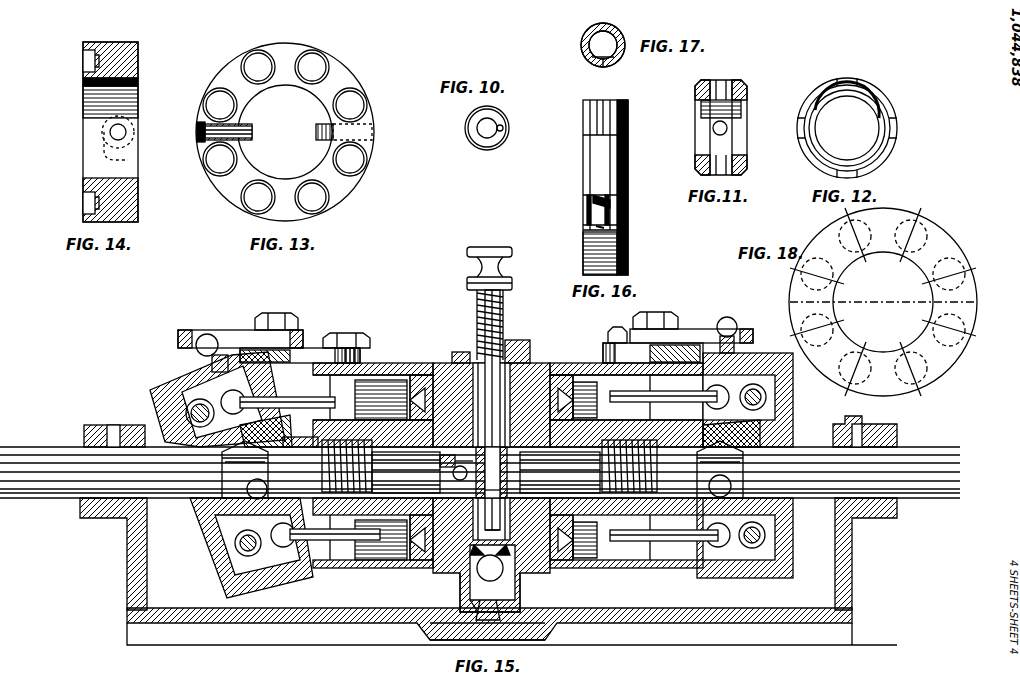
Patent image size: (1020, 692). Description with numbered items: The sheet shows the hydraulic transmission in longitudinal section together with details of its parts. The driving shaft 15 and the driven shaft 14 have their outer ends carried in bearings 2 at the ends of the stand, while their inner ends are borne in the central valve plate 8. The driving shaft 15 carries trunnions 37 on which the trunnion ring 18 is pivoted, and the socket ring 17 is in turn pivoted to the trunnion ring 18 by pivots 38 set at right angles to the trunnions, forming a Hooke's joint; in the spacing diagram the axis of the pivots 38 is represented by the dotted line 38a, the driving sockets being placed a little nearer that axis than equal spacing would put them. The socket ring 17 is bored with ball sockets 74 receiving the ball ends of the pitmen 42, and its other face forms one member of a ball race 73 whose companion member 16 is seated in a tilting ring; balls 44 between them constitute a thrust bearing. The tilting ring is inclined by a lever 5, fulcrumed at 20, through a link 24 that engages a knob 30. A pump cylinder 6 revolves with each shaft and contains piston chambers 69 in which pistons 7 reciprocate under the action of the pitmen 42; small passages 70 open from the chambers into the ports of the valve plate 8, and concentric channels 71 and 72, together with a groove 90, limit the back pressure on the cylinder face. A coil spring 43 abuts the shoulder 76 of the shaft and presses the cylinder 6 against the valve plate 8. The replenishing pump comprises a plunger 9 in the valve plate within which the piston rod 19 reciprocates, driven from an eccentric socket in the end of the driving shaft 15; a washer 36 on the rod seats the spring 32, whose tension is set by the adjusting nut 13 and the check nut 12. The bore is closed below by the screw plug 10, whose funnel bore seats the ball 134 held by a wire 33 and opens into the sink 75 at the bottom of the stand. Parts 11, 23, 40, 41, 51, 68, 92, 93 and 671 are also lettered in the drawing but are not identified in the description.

In FIG. 15, the bearings 2 is at (489, 431).
In FIG. 15, the lever 5 is at (471, 353).
In FIG. 15, the pump cylinder 6 is at (508, 466).
In FIG. 15, the pistons 7 is at (490, 467).
In FIG. 15, the valve plate 8 is at (491, 487).
In FIG. 17, the plunger 9 is at (603, 36).
In FIG. 16, the plunger 9 is at (629, 158).
In FIG. 15, the plunger 9 is at (482, 380).
In FIG. 15, the screw plug 10 is at (496, 592).
In FIG. 15, the nut 11 is at (519, 346).
In FIG. 15, the check nut 12 is at (502, 260).
In FIG. 15, the adjusting nut 13 is at (501, 283).
In FIG. 15, the driven shaft 14 is at (502, 569).
In FIG. 10, the driving shaft 15 is at (465, 128).
In FIG. 15, the driving shaft 15 is at (480, 479).
In FIG. 15, the companion race member 16 is at (491, 547).
In FIG. 14, the socket ring 17 is at (97, 132).
In FIG. 13, the socket ring 17 is at (279, 132).
In FIG. 15, the socket ring 17 is at (471, 468).
In FIG. 11, the trunnion ring 18 is at (747, 110).
In FIG. 12, the trunnion ring 18 is at (812, 100).
In FIG. 15, the trunnion ring 18 is at (500, 431).
In FIG. 15, the piston rod 19 is at (491, 451).
In FIG. 15, the fulcrum 20 is at (475, 337).
In FIG. 15, the nut 23 is at (466, 312).
In FIG. 15, the link 24 is at (465, 338).
In FIG. 15, the knob 30 is at (452, 336).
In FIG. 15, the spring 32 is at (504, 307).
In FIG. 15, the wire 33 is at (500, 547).
In FIG. 15, the washer 36 is at (458, 347).
In FIG. 15, the trunnions 37 is at (482, 470).
In FIG. 13, the pivots 38 is at (284, 132).
In FIG. 18, the axis of pivot 38a is at (882, 302).
In FIG. 10, the pin 40 is at (498, 116).
In FIG. 15, the pin 40 is at (448, 463).
In FIG. 10, the pin hole 41 is at (503, 128).
In FIG. 15, the pitmen 42 is at (270, 390).
In FIG. 15, the coil spring 43 is at (489, 466).
In FIG. 15, the balls 44 is at (476, 470).
In FIG. 15, the pin 51 is at (475, 470).
In FIG. 16, the thread 68 is at (629, 265).
In FIG. 15, the piston chambers 69 is at (476, 470).
In FIG. 15, the passages 70 is at (471, 470).
In FIG. 15, the outer concentric channel 71 is at (508, 442).
In FIG. 15, the inner concentric channel 72 is at (501, 469).
In FIG. 14, the ball race 73 is at (78, 132).
In FIG. 13, the ball sockets 74 is at (285, 132).
In FIG. 15, the sink 75 is at (487, 625).
In FIG. 15, the shoulder 76 is at (300, 441).
In FIG. 15, the groove 90 is at (486, 472).
In FIG. 16, the slot 92 is at (592, 198).
In FIG. 15, the slot 92 is at (491, 472).
In FIG. 16, the slot 93 is at (596, 228).
In FIG. 15, the slot 93 is at (491, 486).
In FIG. 15, the ball 134 is at (470, 585).
In FIG. 17, the groove 671 is at (605, 70).
In FIG. 16, the groove 671 is at (613, 210).